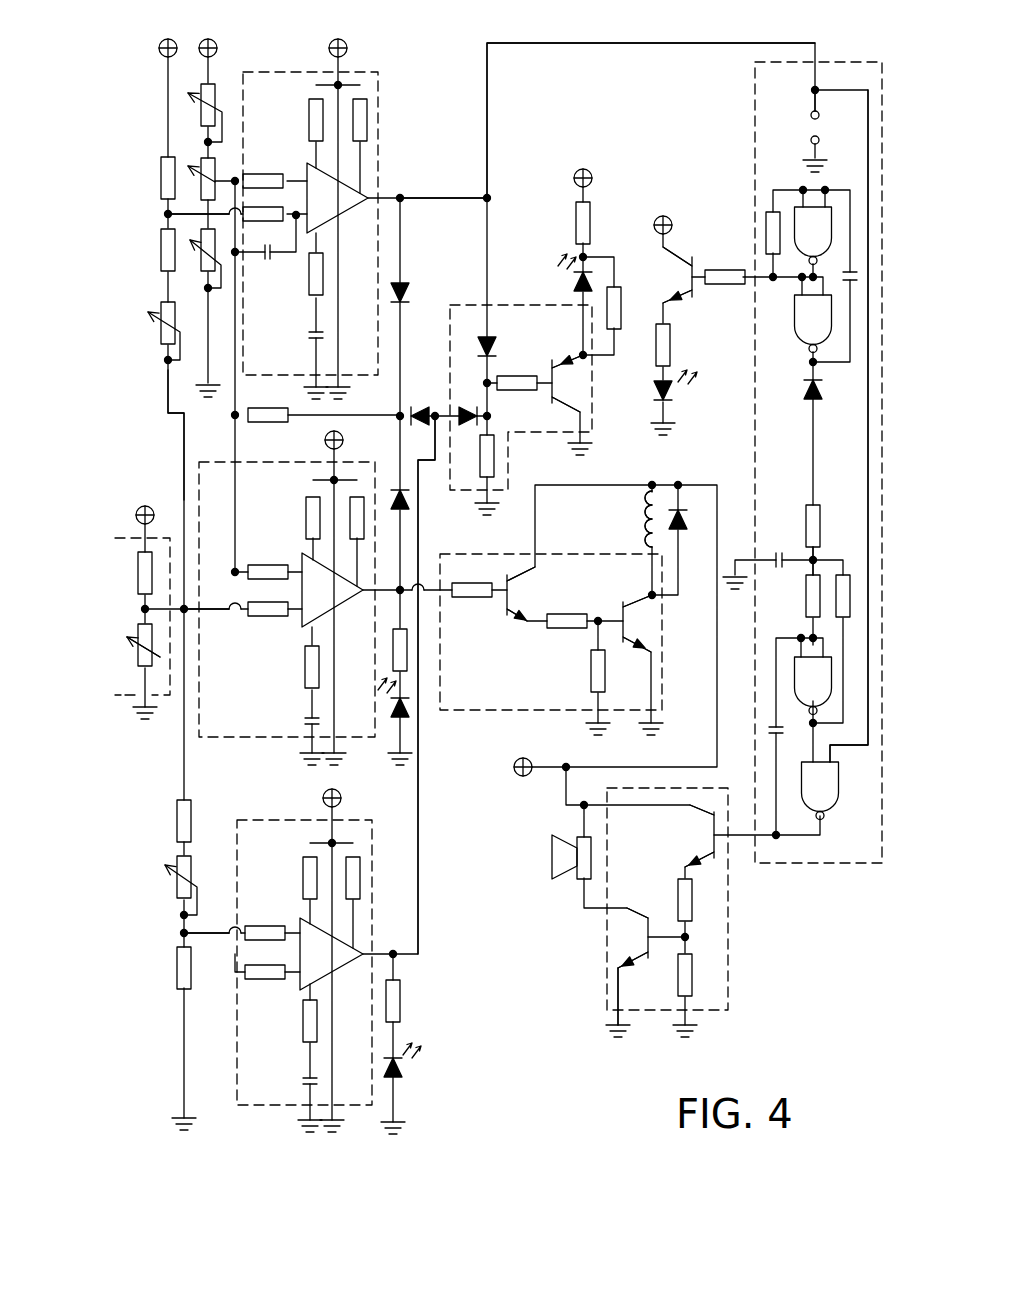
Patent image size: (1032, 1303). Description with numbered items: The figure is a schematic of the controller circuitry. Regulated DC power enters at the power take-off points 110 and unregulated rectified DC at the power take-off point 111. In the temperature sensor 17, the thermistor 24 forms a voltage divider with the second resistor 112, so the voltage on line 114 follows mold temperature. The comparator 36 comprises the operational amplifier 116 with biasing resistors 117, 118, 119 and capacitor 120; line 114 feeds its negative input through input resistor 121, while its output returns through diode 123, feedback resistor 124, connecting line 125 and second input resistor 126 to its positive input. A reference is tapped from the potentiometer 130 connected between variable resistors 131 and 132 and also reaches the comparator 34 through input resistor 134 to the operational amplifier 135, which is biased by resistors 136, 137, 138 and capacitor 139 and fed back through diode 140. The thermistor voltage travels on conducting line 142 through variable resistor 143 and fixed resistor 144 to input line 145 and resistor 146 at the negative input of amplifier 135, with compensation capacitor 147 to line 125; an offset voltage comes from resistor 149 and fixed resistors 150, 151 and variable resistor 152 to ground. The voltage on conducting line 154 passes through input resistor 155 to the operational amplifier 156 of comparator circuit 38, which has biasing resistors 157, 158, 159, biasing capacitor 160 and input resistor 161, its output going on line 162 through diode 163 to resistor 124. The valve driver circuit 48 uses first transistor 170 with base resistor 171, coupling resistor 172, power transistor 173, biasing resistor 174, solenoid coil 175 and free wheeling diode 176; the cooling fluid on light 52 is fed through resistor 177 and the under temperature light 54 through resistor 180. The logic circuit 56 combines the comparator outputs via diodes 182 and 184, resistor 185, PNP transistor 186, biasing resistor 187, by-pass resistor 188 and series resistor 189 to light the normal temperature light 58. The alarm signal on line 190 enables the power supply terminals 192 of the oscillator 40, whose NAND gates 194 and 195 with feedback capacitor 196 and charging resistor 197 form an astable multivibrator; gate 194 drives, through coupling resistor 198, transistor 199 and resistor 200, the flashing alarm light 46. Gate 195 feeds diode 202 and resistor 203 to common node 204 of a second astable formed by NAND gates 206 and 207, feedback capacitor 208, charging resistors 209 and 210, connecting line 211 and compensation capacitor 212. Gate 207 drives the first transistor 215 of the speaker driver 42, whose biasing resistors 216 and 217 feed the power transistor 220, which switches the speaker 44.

The temperature sensor 17 is at (168, 698).
The thermistor 24 is at (143, 674).
The comparator 34 is at (378, 72).
The comparator 36 is at (258, 741).
The comparator circuit 38 is at (252, 1106).
The oscillator 40 is at (755, 460).
The speaker driver 42 is at (607, 967).
The speaker 44 is at (551, 853).
The alarm light 46 is at (670, 396).
The valve driver circuit 48 is at (485, 553).
The cooling fluid on light 52 is at (411, 712).
The under temperature light 54 is at (403, 1072).
The logic circuit 56 is at (450, 339).
The normal temperature light 58 is at (576, 289).
The power take-off points 110 is at (159, 50).
The power take-off point 111 is at (538, 762).
The second resistor 112 is at (143, 548).
The line 114 is at (205, 612).
The differential operational amplifier 116 is at (343, 606).
The biasing resistor 117 is at (306, 521).
The biasing resistor 118 is at (360, 497).
The biasing resistor 119 is at (305, 661).
The capacitor 120 is at (305, 718).
The input resistor 121 is at (262, 617).
The diode 123 is at (409, 504).
The feedback resistor 124 is at (257, 410).
The connecting line 125 is at (237, 498).
The second input resistor 126 is at (262, 566).
The potentiometer 130 is at (200, 198).
The variable resistor 131 is at (200, 105).
The variable resistor 132 is at (200, 262).
The input resistor 134 is at (267, 178).
The differential operational amplifier 135 is at (345, 210).
The biasing resistor 136 is at (309, 111).
The biasing resistor 137 is at (367, 122).
The biasing resistor 138 is at (309, 282).
The capacitor 139 is at (309, 338).
The diode 140 is at (408, 284).
The conducting line 142 is at (166, 388).
The variable resistor 143 is at (161, 337).
The fixed resistor 144 is at (161, 245).
The input line 145 is at (190, 214).
The resistor 146 is at (252, 222).
The compensation capacitor 147 is at (268, 261).
The resistor 149 is at (161, 170).
The fixed resistor 150 is at (177, 819).
The fixed resistor 151 is at (177, 965).
The variable resistor 152 is at (177, 888).
The conducting line 154 is at (200, 938).
The input resistor 155 is at (258, 926).
The operational amplifier 156 is at (335, 969).
The biasing resistor 157 is at (303, 871).
The biasing resistor 158 is at (360, 879).
The biasing resistor 159 is at (303, 1031).
The biasing capacitor 160 is at (303, 1083).
The input resistor 161 is at (260, 980).
The line 162 is at (419, 822).
The diode 163 is at (425, 408).
The first transistor 170 is at (525, 571).
The base resistor 171 is at (470, 598).
The coupling resistor 172 is at (571, 629).
The second power transistor 173 is at (641, 604).
The biasing resistor 174 is at (590, 671).
The solenoid coil 175 is at (645, 539).
The free wheeling diode 176 is at (681, 518).
The resistor 177 is at (409, 652).
The resistor 180 is at (401, 1001).
The diode 182 is at (464, 410).
The diode 184 is at (496, 346).
The resistor 185 is at (514, 376).
The PNP transistor 186 is at (571, 405).
The biasing resistor 187 is at (495, 457).
The by-pass resistor 188 is at (616, 326).
The series resistor 189 is at (576, 223).
The line 190 is at (487, 153).
The power supply terminals 192 is at (811, 114).
The NAND gate 194 is at (800, 201).
The NAND gate 195 is at (795, 306).
The feedback capacitor 196 is at (822, 280).
The charging resistor 197 is at (766, 229).
The coupling resistor 198 is at (736, 258).
The transistor 199 is at (683, 255).
The resistor 200 is at (670, 350).
The diode 202 is at (818, 396).
The resistor 203 is at (816, 515).
The common node 204 is at (814, 557).
The NAND gate 206 is at (795, 676).
The NAND gate 207 is at (827, 806).
The feedback capacitor 208 is at (770, 728).
The charging resistor 209 is at (843, 580).
The charging resistor 210 is at (806, 610).
The connecting line 211 is at (838, 749).
The compensation capacitor 212 is at (778, 553).
The first transistor 215 is at (697, 810).
The biasing resistor 216 is at (678, 896).
The biasing resistor 217 is at (693, 979).
The power transistor 220 is at (630, 918).